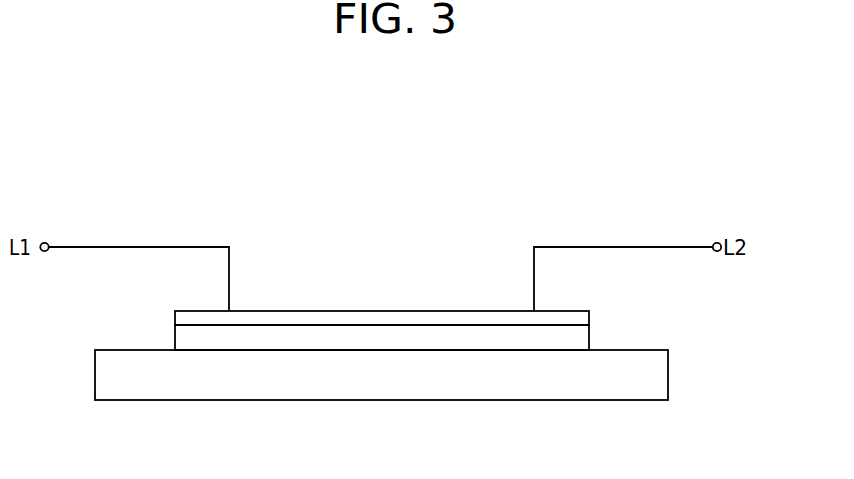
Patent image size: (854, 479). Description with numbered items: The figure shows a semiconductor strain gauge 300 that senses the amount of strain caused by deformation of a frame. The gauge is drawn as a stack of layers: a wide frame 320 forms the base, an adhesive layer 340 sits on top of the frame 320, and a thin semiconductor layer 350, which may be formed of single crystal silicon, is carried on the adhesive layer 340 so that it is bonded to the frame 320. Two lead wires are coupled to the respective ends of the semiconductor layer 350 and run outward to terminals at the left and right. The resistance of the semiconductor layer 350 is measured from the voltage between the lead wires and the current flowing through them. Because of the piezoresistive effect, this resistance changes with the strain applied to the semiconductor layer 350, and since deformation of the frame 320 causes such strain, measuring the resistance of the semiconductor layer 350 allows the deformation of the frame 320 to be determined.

The semiconductor strain gauge 300 is at (411, 247).
The frame 320 is at (375, 388).
The adhesive layer 340 is at (316, 340).
The semiconductor layer 350 is at (437, 318).